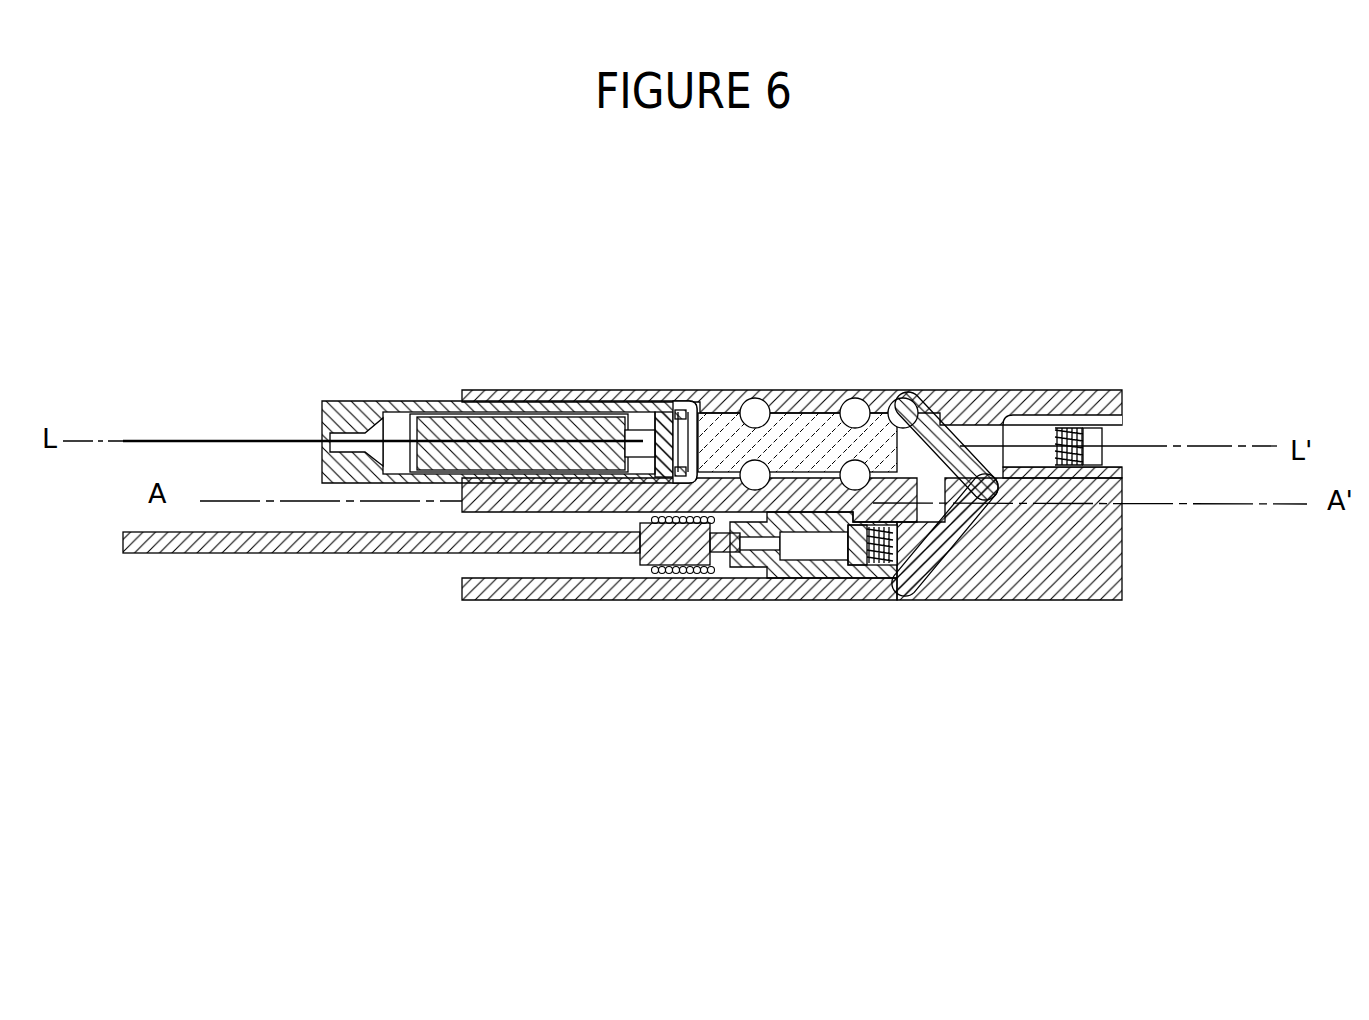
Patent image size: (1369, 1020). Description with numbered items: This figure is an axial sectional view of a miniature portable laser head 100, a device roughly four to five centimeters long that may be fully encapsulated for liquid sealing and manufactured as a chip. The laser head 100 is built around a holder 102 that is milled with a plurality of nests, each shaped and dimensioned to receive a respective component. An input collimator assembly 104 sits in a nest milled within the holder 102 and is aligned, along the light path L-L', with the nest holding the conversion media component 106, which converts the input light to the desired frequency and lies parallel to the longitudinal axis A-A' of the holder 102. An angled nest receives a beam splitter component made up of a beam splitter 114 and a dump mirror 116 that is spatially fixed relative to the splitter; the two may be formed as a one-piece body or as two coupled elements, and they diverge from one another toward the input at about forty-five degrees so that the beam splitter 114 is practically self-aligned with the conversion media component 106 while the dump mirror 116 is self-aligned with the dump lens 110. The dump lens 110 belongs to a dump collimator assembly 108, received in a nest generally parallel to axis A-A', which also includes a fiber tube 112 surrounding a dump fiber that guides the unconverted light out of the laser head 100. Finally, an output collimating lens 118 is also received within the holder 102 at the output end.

The portable laser head 100 is at (529, 613).
The holder 102 is at (1070, 563).
The input collimator assembly 104 is at (380, 392).
The conversion media component 106 is at (760, 440).
The dump collimator assembly 108 is at (810, 580).
The dump lens 110 is at (862, 543).
The fiber tube 112 is at (750, 562).
The beam splitter 114 is at (940, 427).
The dump mirror 116 is at (950, 542).
The output collimating lens 118 is at (1088, 442).